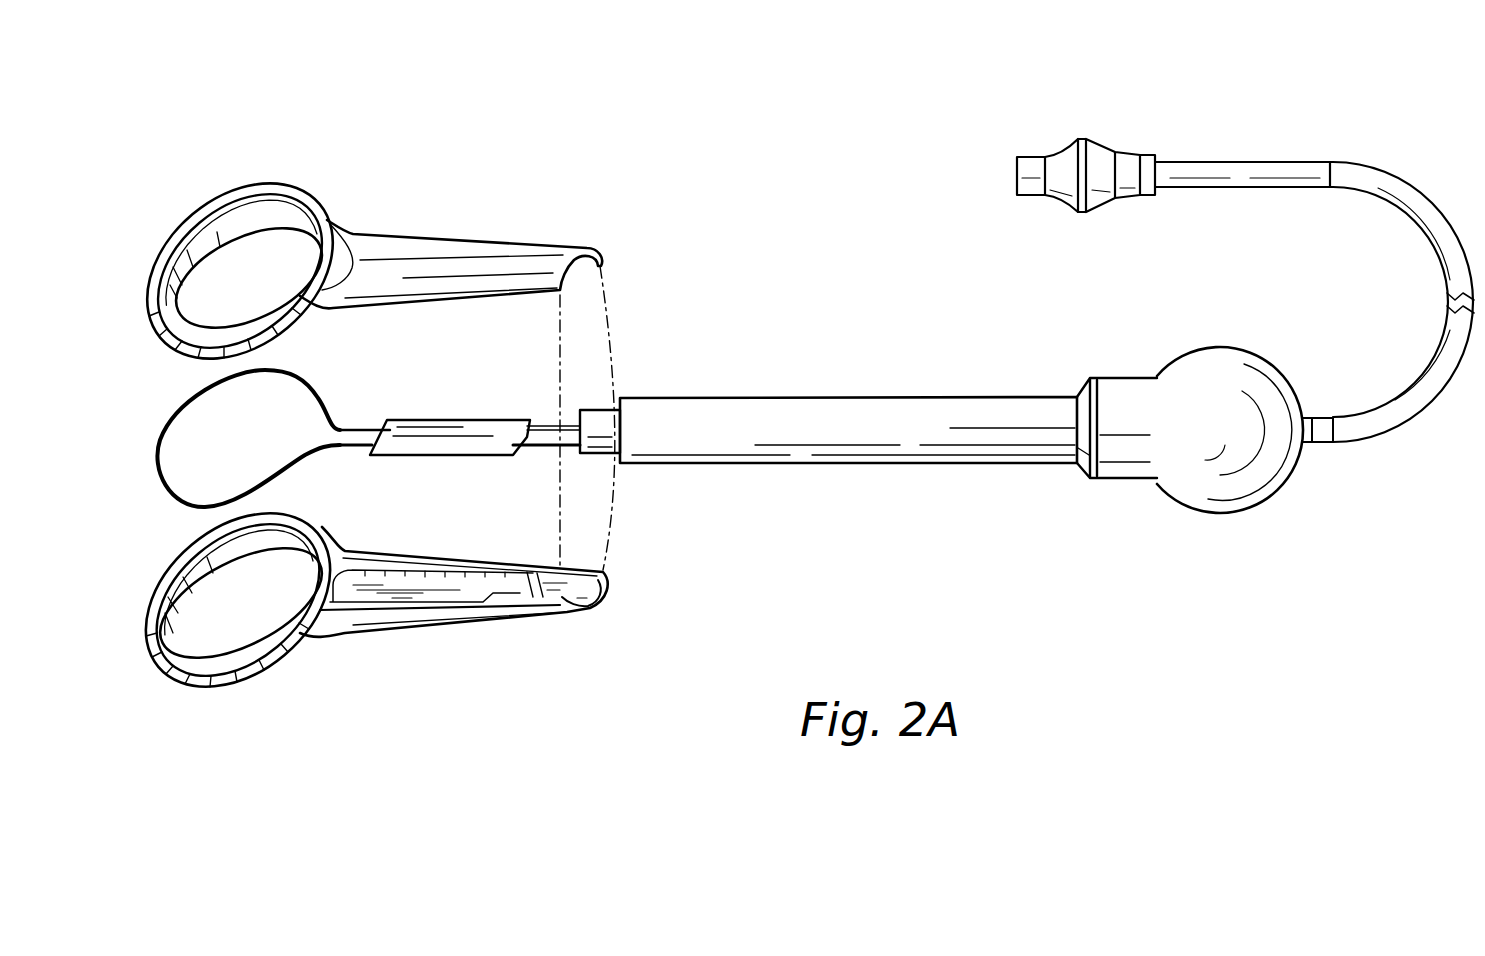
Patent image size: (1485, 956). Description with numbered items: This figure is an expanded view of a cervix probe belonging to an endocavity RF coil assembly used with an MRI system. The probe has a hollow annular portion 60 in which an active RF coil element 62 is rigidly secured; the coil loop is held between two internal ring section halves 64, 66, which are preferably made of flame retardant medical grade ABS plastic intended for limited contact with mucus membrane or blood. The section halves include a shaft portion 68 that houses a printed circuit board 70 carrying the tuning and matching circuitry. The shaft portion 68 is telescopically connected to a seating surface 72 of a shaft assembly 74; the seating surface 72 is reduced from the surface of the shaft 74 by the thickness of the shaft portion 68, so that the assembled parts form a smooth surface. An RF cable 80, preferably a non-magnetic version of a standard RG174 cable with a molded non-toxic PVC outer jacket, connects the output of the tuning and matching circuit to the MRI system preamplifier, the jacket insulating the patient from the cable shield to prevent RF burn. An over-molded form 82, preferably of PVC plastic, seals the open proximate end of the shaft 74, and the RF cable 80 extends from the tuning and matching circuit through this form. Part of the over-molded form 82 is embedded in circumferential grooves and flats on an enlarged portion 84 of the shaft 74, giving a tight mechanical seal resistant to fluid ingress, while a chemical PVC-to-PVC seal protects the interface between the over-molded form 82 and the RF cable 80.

The hollow annular portion 60 is at (289, 165).
The active RF coil element 62 is at (202, 394).
The internal ring section half 64 is at (437, 253).
The internal ring section half 66 is at (422, 630).
The shaft portion 68 is at (582, 178).
The printed circuit board 70 is at (477, 418).
The seating surface 72 is at (607, 425).
The shaft assembly 74 is at (877, 397).
The RF cable 80 is at (1370, 163).
The over-molded form 82 is at (1264, 523).
The enlarged portion 84 is at (1122, 468).